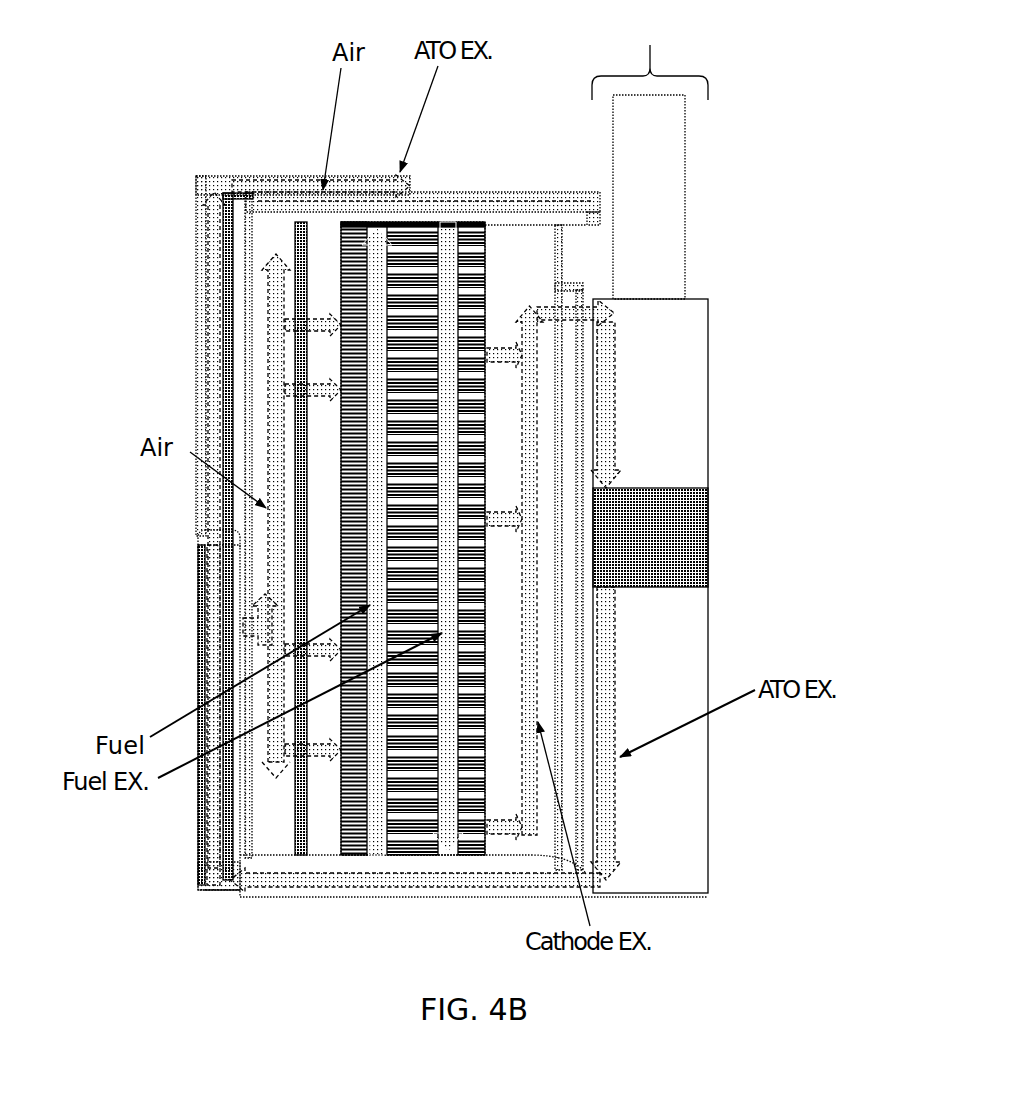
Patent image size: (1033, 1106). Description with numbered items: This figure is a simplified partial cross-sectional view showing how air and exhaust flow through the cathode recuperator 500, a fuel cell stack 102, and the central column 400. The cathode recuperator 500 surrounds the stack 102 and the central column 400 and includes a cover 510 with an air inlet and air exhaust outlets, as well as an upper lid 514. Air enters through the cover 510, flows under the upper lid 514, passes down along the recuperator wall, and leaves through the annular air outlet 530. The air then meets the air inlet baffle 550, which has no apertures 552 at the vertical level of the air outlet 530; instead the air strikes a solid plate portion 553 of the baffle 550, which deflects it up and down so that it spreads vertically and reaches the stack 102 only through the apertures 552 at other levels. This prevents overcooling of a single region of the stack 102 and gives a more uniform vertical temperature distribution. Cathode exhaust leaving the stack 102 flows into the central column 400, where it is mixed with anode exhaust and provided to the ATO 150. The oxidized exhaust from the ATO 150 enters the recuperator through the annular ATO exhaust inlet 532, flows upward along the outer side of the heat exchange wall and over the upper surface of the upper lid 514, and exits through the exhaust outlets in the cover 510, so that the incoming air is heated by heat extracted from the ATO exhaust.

The cathode recuperator 500 is at (185, 262).
The cover 510 is at (253, 170).
The upper lid 514 is at (530, 193).
The fuel cell stack 102 is at (430, 220).
The air inlet baffle 550 is at (298, 430).
The apertures 552 is at (306, 392).
The solid plate portion 553 is at (292, 612).
The air outlet 530 is at (242, 627).
The ATO exhaust inlet 532 is at (203, 871).
The central column 400 is at (597, 454).
The ATO 150 is at (712, 520).